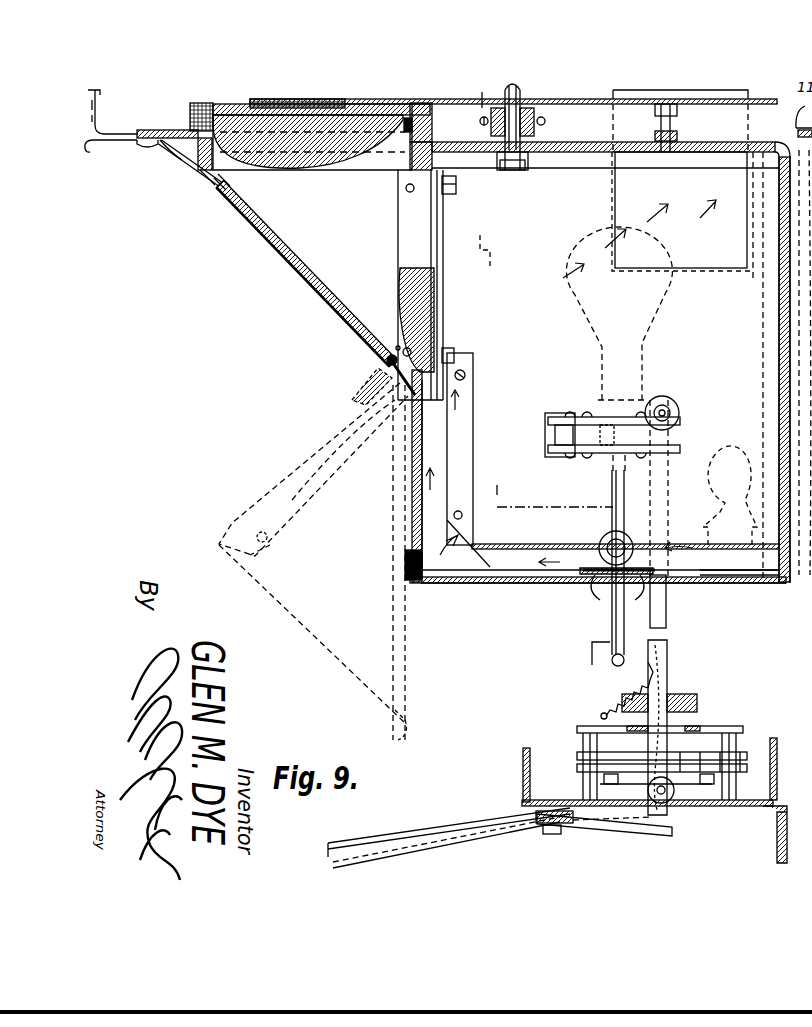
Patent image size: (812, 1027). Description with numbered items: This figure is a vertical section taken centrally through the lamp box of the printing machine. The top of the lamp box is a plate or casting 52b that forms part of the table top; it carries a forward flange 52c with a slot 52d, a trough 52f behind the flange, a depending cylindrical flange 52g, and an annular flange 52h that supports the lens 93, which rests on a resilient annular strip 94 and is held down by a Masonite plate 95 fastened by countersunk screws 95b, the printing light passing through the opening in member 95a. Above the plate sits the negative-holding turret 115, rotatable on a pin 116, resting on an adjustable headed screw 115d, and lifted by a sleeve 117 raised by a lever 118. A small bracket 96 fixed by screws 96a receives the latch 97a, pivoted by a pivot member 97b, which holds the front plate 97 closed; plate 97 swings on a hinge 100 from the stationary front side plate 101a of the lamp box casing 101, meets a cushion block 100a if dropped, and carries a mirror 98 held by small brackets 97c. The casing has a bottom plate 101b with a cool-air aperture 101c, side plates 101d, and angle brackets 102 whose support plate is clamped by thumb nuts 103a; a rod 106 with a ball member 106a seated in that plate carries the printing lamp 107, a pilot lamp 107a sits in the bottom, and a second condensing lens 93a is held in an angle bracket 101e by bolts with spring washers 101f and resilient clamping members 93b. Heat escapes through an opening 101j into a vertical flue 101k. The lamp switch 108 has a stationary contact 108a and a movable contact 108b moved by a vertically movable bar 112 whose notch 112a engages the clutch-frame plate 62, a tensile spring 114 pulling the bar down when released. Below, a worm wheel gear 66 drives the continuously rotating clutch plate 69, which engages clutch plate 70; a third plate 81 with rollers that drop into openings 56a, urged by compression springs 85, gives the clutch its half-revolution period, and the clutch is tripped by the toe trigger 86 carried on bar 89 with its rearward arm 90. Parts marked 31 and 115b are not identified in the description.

The shaft 31 is at (546, 371).
The plate or casting 52b is at (622, 152).
The flange 52c is at (430, 125).
The slot or opening 52d is at (107, 142).
The trough 52f is at (175, 132).
The depending cylindrical flange 52g is at (430, 160).
The annular flange 52h is at (214, 155).
The spaced openings 56a is at (668, 802).
The plate 62 is at (745, 729).
The worm wheel gear 66 is at (680, 704).
The clutch plate 69 is at (585, 754).
The clutch plate 70 is at (578, 767).
The third plate 81 is at (672, 795).
The compression coiled springs 85 is at (602, 772).
The toe trigger or pedal 86 is at (405, 838).
The bar 89 is at (545, 818).
The arm 90 is at (585, 825).
The lens 93 is at (318, 158).
The condensing lens 93a is at (270, 528).
The clamping members 93b is at (392, 370).
The resilient annular strip 94 is at (410, 128).
The plate 95 is at (232, 104).
The light opening member 95a is at (305, 102).
The countersunk screws 95b is at (418, 106).
The small bracket 96 is at (186, 160).
The small screws 96a is at (150, 145).
The front plate 97 is at (303, 275).
The latch 97a is at (402, 730).
The pivot member 97b is at (222, 190).
The small brackets 97c is at (388, 345).
The mirror 98 is at (398, 612).
The hinge 100 is at (372, 380).
The resilient cushion block 100a is at (405, 565).
The lamp box casing 101 is at (559, 597).
The front side plate 101a is at (412, 465).
The bottom plate 101b is at (475, 583).
The aperture 101c is at (718, 583).
The side plates 101d is at (452, 350).
The angle bracket 101e is at (270, 545).
The spring washers 101f is at (445, 180).
The opening 101j is at (730, 268).
The vertical flue 101k is at (668, 99).
The brackets 102 is at (472, 560).
The wing or thumb nuts 103a is at (612, 575).
The rod 106 is at (612, 488).
The ball member 106a is at (612, 538).
The printing lamp 107 is at (675, 298).
The pilot lamp 107a is at (715, 452).
The printing lamp switch 108 is at (693, 428).
The stationary contact member 108a is at (548, 450).
The movable contact 108b is at (562, 420).
The vertically movable bar 112 is at (668, 677).
The notch 112a is at (665, 720).
The tensile coiled spring 114 is at (628, 690).
The rotatable plate or turret 115 is at (604, 103).
The nut 115b is at (672, 136).
The headed screw 115d is at (672, 114).
The pin 116 is at (519, 86).
The sleeve 117 is at (536, 125).
The lever 118 is at (538, 116).